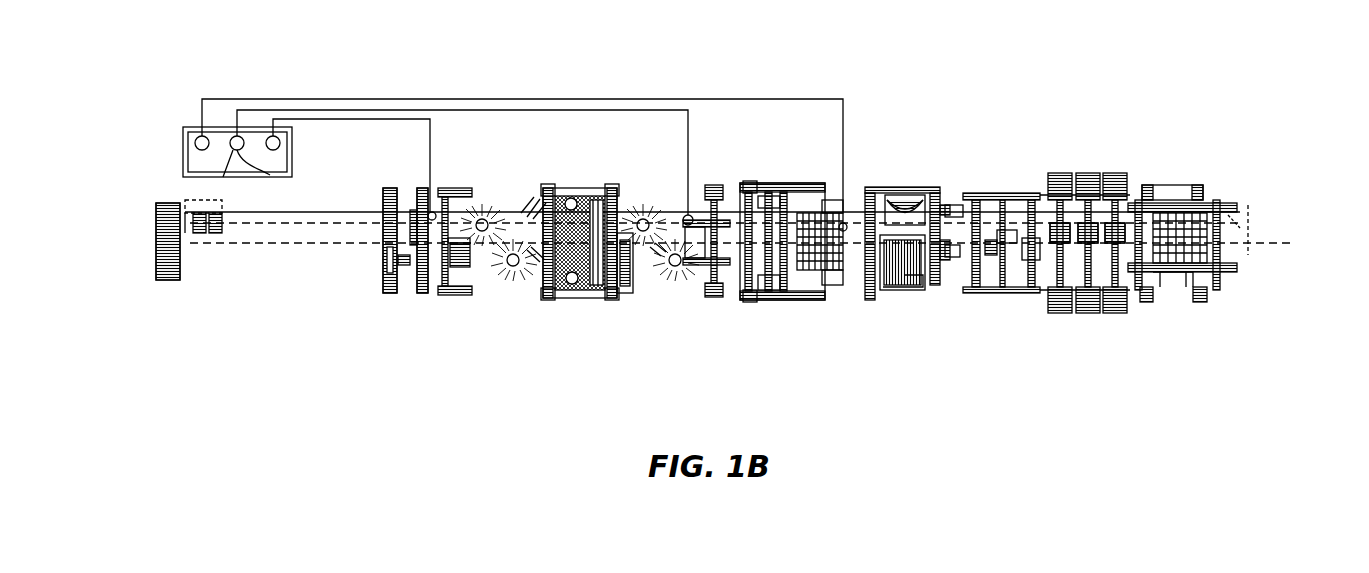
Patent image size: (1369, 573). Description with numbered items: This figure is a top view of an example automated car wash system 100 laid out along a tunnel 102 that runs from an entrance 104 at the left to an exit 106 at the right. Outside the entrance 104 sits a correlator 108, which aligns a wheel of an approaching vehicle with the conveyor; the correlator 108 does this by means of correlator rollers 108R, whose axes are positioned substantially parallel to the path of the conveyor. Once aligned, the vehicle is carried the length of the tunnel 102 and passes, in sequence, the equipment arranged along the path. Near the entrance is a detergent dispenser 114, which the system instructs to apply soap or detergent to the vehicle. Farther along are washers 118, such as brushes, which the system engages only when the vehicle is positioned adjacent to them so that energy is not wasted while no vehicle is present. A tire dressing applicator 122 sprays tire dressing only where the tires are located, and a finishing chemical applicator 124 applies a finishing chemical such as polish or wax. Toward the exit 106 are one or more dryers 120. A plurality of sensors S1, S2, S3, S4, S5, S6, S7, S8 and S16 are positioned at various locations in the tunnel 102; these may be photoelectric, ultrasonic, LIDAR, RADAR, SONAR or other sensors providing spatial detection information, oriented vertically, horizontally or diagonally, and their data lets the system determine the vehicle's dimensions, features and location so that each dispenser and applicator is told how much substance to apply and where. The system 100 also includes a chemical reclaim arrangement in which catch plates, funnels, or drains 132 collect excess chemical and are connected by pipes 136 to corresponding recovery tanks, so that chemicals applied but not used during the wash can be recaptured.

The automated car wash system 100 is at (1142, 62).
The tunnel 102 is at (365, 312).
The entrance 104 is at (374, 222).
The exit 106 is at (1276, 238).
The correlator 108 is at (165, 281).
The correlator rollers 108R is at (157, 208).
The detergent dispenser 114 is at (416, 292).
The washer 118 is at (520, 263).
The dryer 120 is at (1028, 256).
The tire dressing applicator 122 is at (712, 298).
The finishing chemical applicator 124 is at (861, 298).
The catch plate, funnel, or drain 132 is at (197, 152).
The pipe 136 is at (318, 99).
The sensor S1 is at (399, 294).
The sensor S2 is at (423, 190).
The sensor S3 is at (430, 294).
The sensor S4 is at (484, 217).
The sensor S5 is at (513, 230).
The sensor S6 is at (552, 244).
The sensor S7 is at (613, 275).
The sensor S8 is at (643, 216).
The sensor S16 is at (1000, 230).